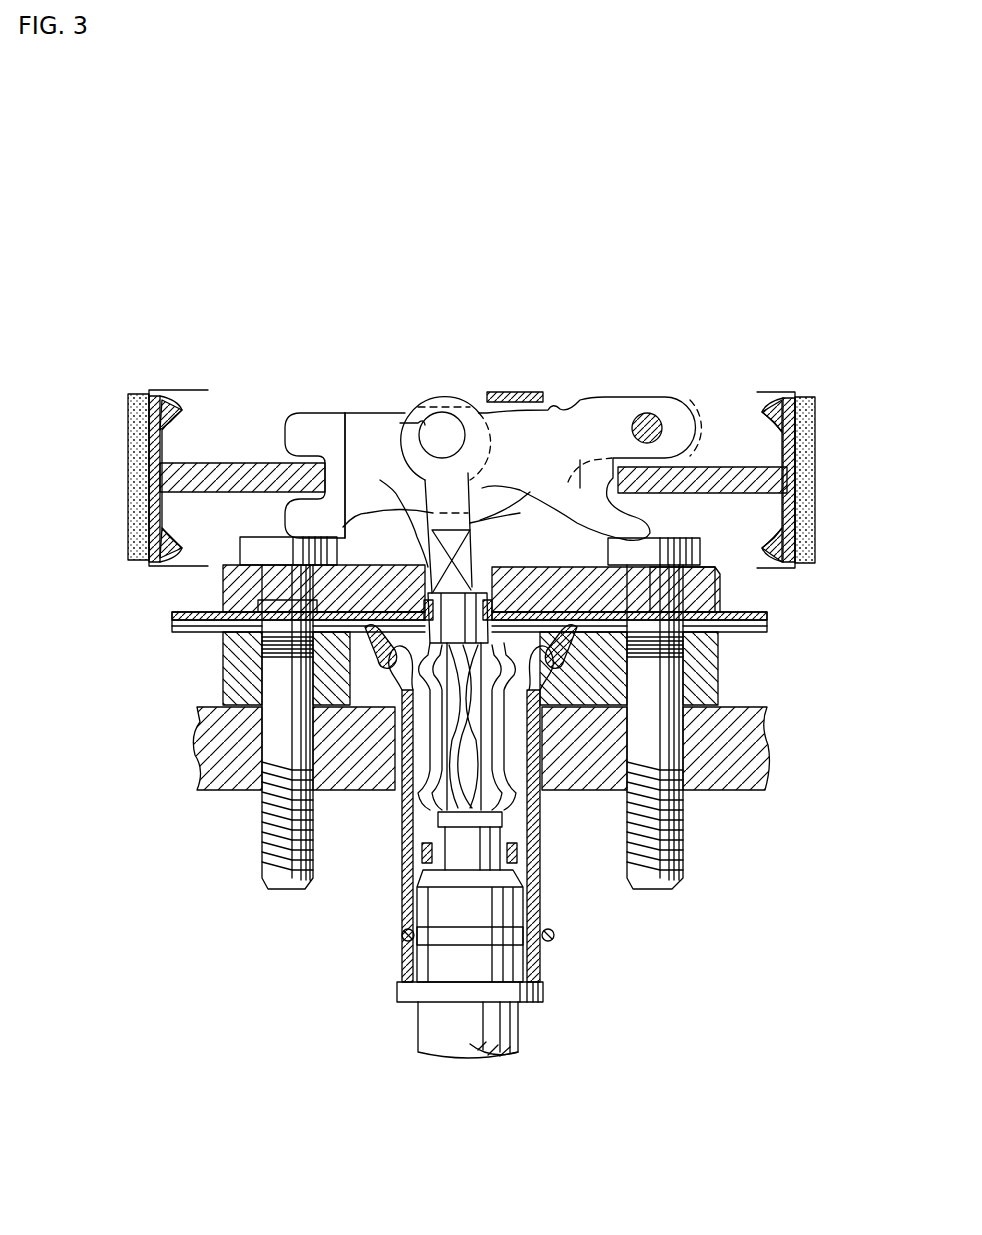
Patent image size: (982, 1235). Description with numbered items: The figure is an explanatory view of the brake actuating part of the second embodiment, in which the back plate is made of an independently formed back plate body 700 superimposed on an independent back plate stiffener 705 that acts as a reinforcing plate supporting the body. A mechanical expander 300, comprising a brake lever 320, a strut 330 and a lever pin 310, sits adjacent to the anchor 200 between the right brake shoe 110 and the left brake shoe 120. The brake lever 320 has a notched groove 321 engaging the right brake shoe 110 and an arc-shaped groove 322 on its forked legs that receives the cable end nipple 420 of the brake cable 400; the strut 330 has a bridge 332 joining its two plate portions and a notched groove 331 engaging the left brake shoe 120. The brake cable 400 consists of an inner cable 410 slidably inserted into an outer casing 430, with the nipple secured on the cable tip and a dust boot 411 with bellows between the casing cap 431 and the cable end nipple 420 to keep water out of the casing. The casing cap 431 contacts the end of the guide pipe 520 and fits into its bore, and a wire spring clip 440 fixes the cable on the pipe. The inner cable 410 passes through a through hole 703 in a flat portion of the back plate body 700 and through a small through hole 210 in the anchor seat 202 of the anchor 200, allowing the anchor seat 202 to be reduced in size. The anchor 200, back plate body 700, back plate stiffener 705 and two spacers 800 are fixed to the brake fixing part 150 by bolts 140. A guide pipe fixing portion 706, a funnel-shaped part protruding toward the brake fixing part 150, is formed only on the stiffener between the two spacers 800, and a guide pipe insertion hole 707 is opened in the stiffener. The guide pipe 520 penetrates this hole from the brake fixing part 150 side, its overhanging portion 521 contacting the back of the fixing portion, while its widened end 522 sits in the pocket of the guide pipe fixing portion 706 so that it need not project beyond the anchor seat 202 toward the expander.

The right brake shoe 110 is at (785, 391).
The left brake shoe 120 is at (157, 390).
The bolt 140 is at (262, 832).
The brake fixing part 150 is at (757, 792).
The anchor 200 is at (727, 598).
The anchor seat 202 is at (713, 583).
The through hole 210 is at (432, 588).
The mechanical expander 300 is at (524, 391).
The lever pin 310 is at (650, 415).
The brake lever 320 is at (580, 487).
The notched groove 321 is at (700, 466).
The arc-shaped groove 322 is at (419, 424).
The strut 330 is at (305, 432).
The notched groove 331 is at (284, 462).
The bridge 332 is at (543, 402).
The brake cable 400 is at (520, 1030).
The inner cable 410 is at (420, 845).
The dust boot 411 is at (420, 815).
The cable end nipple 420 is at (440, 394).
The outer casing 430 is at (438, 1030).
The casing cap 431 is at (428, 915).
The wire spring clip 440 is at (554, 934).
The guide pipe 520 is at (543, 890).
The overhanging portion 521 is at (420, 758).
The widened end 522 is at (290, 628).
The back plate body 700 is at (172, 616).
The through hole 703 is at (300, 606).
The back plate stiffener 705 is at (172, 630).
The guide pipe fixing portion 706 is at (598, 654).
The guide pipe insertion hole 707 is at (420, 660).
The spacer 800 is at (223, 678).